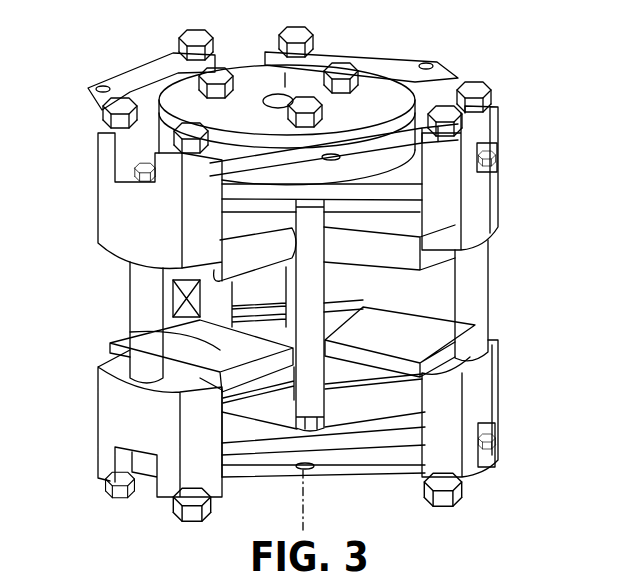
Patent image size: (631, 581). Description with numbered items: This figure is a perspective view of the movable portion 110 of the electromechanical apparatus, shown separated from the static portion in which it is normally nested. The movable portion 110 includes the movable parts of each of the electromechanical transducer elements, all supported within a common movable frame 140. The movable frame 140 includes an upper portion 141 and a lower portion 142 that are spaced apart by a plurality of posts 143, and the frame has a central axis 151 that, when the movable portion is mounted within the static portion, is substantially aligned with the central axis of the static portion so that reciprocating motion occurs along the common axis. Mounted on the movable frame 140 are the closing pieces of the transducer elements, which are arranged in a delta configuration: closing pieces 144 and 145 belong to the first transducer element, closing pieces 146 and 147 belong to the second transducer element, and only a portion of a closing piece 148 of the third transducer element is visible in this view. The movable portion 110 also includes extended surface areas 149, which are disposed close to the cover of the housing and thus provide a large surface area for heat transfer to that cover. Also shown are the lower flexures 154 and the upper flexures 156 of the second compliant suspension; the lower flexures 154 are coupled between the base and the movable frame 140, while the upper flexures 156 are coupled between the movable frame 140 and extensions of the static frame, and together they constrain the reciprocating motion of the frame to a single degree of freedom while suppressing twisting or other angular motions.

The movable portion 110 is at (87, 54).
The movable frame 140 is at (553, 190).
The upper portion 141 is at (482, 201).
The lower portion 142 is at (482, 393).
The posts 143 is at (133, 363).
The closing piece 144 is at (178, 307).
The closing piece 145 is at (220, 350).
The closing piece 146 is at (383, 268).
The closing piece 147 is at (395, 330).
The closing piece 148 is at (198, 299).
The extended surface areas 149 is at (138, 221).
The central axis 151 is at (305, 522).
The lower flexures 154 is at (373, 458).
The upper flexures 156 is at (170, 68).